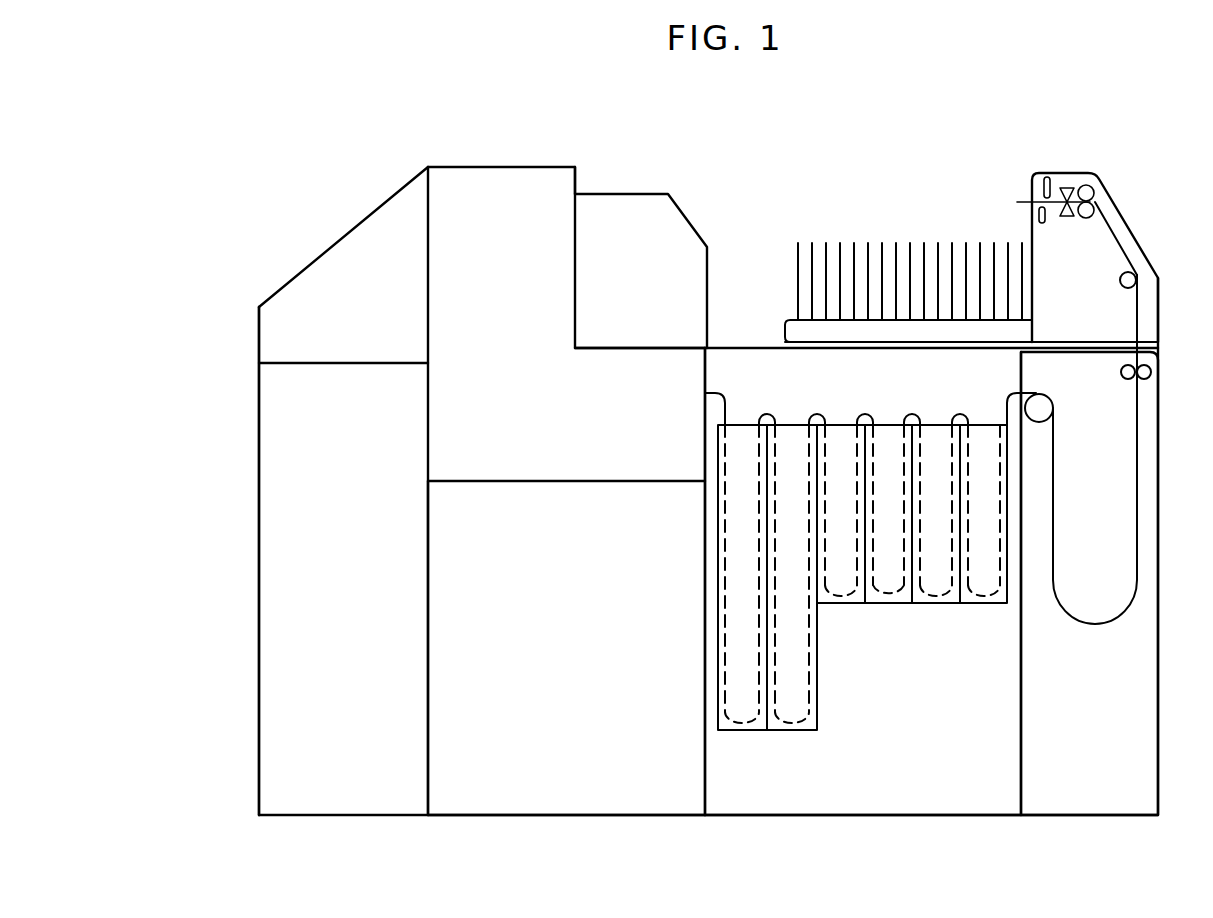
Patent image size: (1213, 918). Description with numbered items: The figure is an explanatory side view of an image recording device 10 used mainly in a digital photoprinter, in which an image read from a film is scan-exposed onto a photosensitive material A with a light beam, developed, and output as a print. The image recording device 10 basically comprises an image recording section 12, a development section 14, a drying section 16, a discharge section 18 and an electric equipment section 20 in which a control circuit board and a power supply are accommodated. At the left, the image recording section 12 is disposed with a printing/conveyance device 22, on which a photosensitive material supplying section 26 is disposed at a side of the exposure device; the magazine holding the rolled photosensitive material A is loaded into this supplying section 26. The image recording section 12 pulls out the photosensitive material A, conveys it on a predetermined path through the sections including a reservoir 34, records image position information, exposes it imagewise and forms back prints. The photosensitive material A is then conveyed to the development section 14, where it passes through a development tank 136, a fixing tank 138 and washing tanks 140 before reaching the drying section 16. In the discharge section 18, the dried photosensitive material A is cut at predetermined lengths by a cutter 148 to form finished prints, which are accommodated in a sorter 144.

The image recording device 10 is at (718, 175).
The image recording section 12 is at (325, 235).
The development section 14 is at (878, 782).
The drying section 16 is at (1096, 792).
The discharge section 18 is at (980, 195).
The electric equipment section 20 is at (285, 580).
The printing/conveyance device 22 is at (497, 188).
The photosensitive material supplying section 26 is at (706, 245).
The reservoir 34 is at (567, 786).
The development tank 136 is at (738, 733).
The fixing tank 138 is at (790, 733).
The washing tanks 140 is at (817, 617).
The sorter 144 is at (880, 240).
The cutter 148 is at (1048, 180).
The photosensitive material A is at (1055, 550).